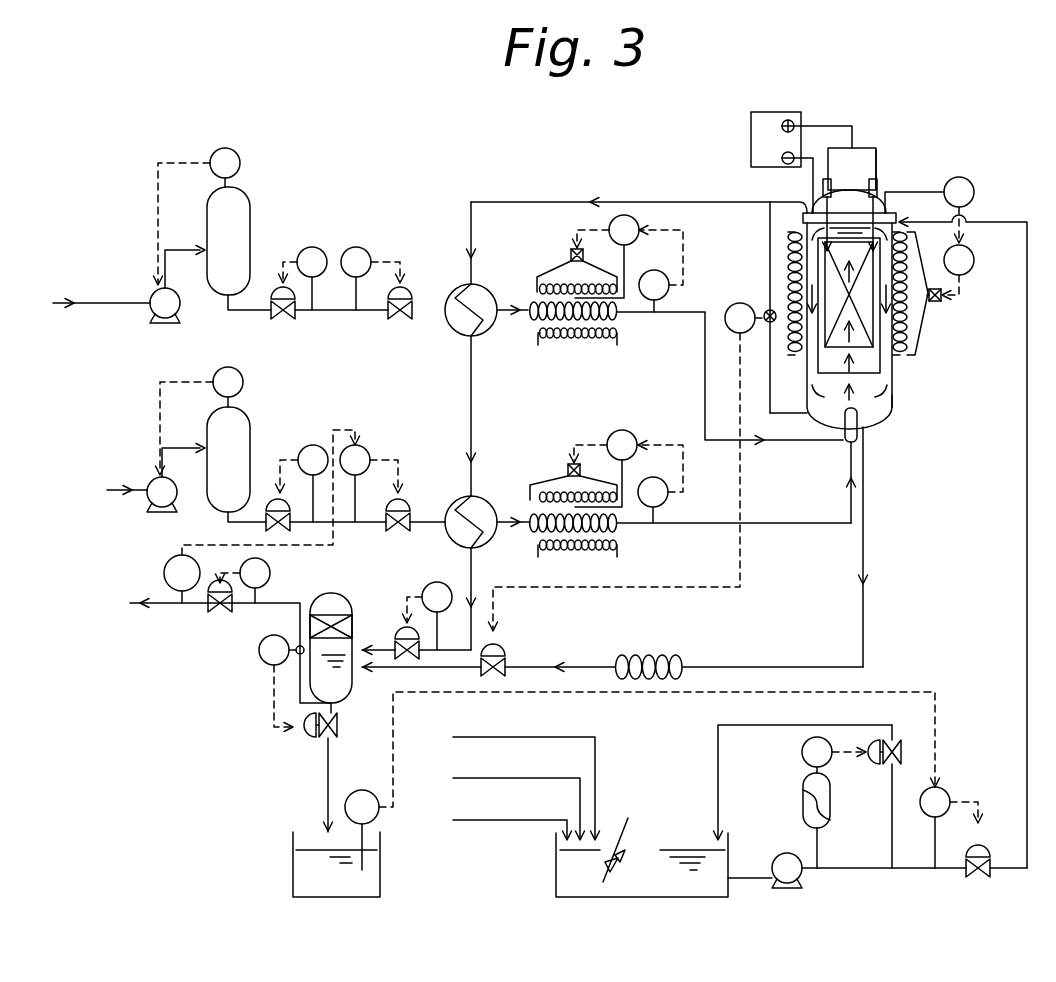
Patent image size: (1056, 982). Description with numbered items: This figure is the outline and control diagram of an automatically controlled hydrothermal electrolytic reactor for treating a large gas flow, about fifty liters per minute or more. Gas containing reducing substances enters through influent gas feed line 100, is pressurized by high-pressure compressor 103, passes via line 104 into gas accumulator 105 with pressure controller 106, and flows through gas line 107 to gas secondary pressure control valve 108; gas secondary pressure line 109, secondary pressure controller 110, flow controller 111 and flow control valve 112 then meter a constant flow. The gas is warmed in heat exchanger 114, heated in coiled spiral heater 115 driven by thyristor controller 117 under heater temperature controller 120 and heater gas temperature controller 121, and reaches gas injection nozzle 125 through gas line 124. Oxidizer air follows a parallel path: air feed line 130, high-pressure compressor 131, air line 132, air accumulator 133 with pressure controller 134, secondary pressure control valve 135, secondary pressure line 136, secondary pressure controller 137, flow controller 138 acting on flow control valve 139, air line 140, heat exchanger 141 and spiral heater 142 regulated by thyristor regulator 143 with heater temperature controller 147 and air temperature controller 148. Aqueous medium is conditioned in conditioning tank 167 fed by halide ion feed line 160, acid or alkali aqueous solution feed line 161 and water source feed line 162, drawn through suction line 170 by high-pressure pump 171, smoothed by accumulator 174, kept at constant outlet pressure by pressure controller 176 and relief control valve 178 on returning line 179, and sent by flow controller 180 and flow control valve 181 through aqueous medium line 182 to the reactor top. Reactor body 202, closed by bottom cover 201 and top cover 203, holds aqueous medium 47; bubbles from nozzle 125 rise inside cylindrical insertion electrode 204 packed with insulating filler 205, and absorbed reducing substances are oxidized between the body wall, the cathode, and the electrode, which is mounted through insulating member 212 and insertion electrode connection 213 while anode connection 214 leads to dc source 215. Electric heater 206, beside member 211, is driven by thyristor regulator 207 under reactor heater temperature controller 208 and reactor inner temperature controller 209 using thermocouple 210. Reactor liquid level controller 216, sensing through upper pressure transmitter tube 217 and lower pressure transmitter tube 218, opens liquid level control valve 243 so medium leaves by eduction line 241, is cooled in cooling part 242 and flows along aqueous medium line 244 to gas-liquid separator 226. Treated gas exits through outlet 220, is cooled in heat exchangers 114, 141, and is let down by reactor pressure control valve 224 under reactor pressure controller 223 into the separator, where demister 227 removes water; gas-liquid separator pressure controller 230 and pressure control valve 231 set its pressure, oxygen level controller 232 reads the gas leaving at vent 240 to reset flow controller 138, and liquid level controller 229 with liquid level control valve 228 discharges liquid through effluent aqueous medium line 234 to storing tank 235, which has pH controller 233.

The influent gas feed line 100 is at (70, 300).
The high-pressure compressor 103 is at (178, 306).
The pump discharge line 104 is at (173, 250).
The gas accumulator 105 is at (245, 225).
The pressure controller 106 is at (238, 152).
The gas line 107 is at (243, 312).
The gas secondary pressure control valve 108 is at (285, 320).
The gas secondary pressure line 109 is at (340, 312).
The secondary pressure controller 110 is at (316, 247).
The flow controller 111 is at (361, 247).
The flow control valve 112 is at (412, 295).
The heat exchanger 114 is at (484, 297).
The spiral heater 115 is at (530, 322).
The thyristor controller 117 is at (572, 250).
The heater temperature controller 120 is at (636, 220).
The heater gas temperature controller 121 is at (663, 292).
The gas line 124 is at (702, 394).
The gas injection nozzle 125 is at (868, 444).
The air feed line 130 is at (130, 485).
The high-pressure compressor 131 is at (173, 487).
The air line 132 is at (177, 448).
The air accumulator 133 is at (245, 437).
The pressure controller 134 is at (243, 382).
The secondary pressure control valve 135 is at (278, 492).
The secondary pressure line 136 is at (339, 524).
The secondary pressure controller 137 is at (316, 445).
The flow controller 138 is at (365, 447).
The flow control valve 139 is at (408, 494).
The air line 140 is at (426, 520).
The heat exchanger 141 is at (483, 503).
The spiral heater 142 is at (532, 535).
The thyristor regulator 143 is at (570, 466).
The heater temperature controller 147 is at (634, 433).
The air temperature controller 148 is at (670, 497).
The halide ion feed line 160 is at (461, 737).
The acid or alkali aqueous solution feed line 161 is at (463, 778).
The water source feed line 162 is at (469, 820).
The aqueous medium conditioning tank 167 is at (605, 880).
The high-pressure pump suction line 170 is at (748, 876).
The high-pressure pump 171 is at (783, 852).
The accumulator 174 is at (804, 802).
The pressure controller 176 is at (802, 752).
The aqueous medium relief control valve 178 is at (898, 749).
The aqueous medium returning line 179 is at (810, 724).
The aqueous medium flow controller 180 is at (948, 791).
The aqueous medium flow control valve 181 is at (985, 830).
The aqueous medium line 182 is at (1025, 739).
The reactor bottom cover 201 is at (893, 420).
The aqueous medium 47 is at (897, 402).
The reactor body 202 is at (892, 376).
The reactor top cover 203 is at (852, 169).
The insertion electrode 204 is at (888, 352).
The insertion electrode filler 205 is at (846, 425).
The electric heater 206 is at (908, 322).
The thyristor regulator 207 is at (942, 304).
The reactor heater temperature controller 208 is at (966, 276).
The reactor inner temperature controller 209 is at (974, 194).
The thermocouple 210 is at (913, 190).
The cooling jacket 211 is at (918, 260).
The insulating member 212 is at (879, 184).
The insertion electrode connection 213 is at (876, 150).
The anode connection 214 is at (853, 124).
The dc source 215 is at (774, 112).
The reactor liquid level controller 216 is at (735, 303).
The liquid level controlling upper pressure transmitter tube 217 is at (768, 272).
The liquid level controlling lower pressure transmitter tube 218 is at (778, 414).
The reactor outlet for effluent gas 220 is at (798, 204).
The reactor pressure controller 223 is at (428, 588).
The reactor pressure control valve 224 is at (400, 637).
The gas-liquid separator 226 is at (342, 602).
The demister 227 is at (324, 600).
The liquid level control valve 228 is at (340, 728).
The liquid level controller 229 is at (262, 660).
The gas-liquid separator pressure controller 230 is at (270, 573).
The gas-liquid separator pressure control valve 231 is at (220, 615).
The oxygen level controller 232 is at (163, 573).
The pH controller 233 is at (379, 817).
The effluent aqueous medium line 234 is at (330, 774).
The effluent aqueous medium storing tank 235 is at (292, 872).
The vent 240 is at (158, 607).
The aqueous medium eduction line 241 is at (866, 530).
The aqueous medium cooling part 242 is at (684, 660).
The liquid level control valve 243 is at (508, 654).
The aqueous medium line 244 is at (415, 669).